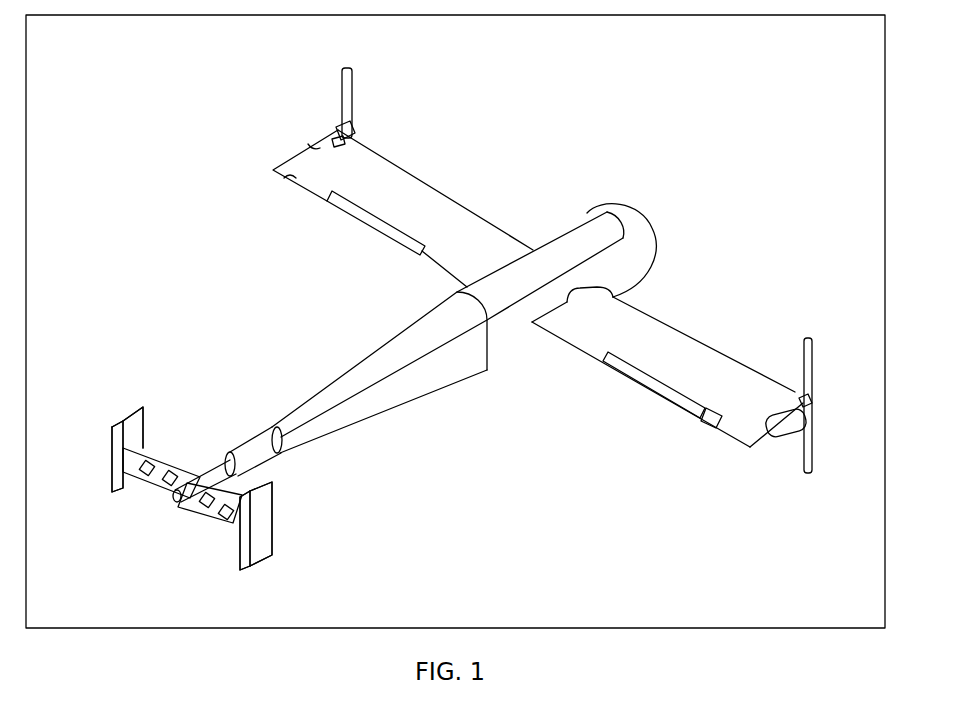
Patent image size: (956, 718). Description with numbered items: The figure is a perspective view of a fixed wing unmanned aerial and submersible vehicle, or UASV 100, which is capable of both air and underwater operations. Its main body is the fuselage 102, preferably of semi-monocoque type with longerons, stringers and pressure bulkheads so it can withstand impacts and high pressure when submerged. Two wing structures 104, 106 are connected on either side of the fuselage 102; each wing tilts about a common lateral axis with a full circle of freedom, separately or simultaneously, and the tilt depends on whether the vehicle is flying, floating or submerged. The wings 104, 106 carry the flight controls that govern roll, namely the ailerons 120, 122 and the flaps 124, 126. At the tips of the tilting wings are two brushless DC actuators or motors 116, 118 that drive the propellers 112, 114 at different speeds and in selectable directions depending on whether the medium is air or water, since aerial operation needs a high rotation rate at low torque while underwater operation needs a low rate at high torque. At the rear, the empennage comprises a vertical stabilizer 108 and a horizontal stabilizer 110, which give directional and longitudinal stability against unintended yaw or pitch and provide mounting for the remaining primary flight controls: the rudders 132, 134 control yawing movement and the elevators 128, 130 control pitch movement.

The unmanned aerial and submersible vehicle 100 is at (770, 72).
The fuselage 102 is at (387, 357).
The wing structure 104 is at (312, 198).
The wing structure 106 is at (686, 336).
The vertical stabilizer 108 is at (110, 460).
The horizontal stabilizer 110 is at (160, 492).
The propeller 112 is at (720, 431).
The propeller 114 is at (330, 128).
The brushless DC actuator or motor 116 is at (803, 400).
The brushless DC actuator or motor 118 is at (335, 128).
The aileron 120 is at (712, 430).
The aileron 122 is at (289, 182).
The flap 124 is at (603, 363).
The flap 126 is at (410, 250).
The elevator 128 is at (143, 427).
The elevator 130 is at (203, 504).
The rudder 132 is at (117, 497).
The rudder 134 is at (243, 567).